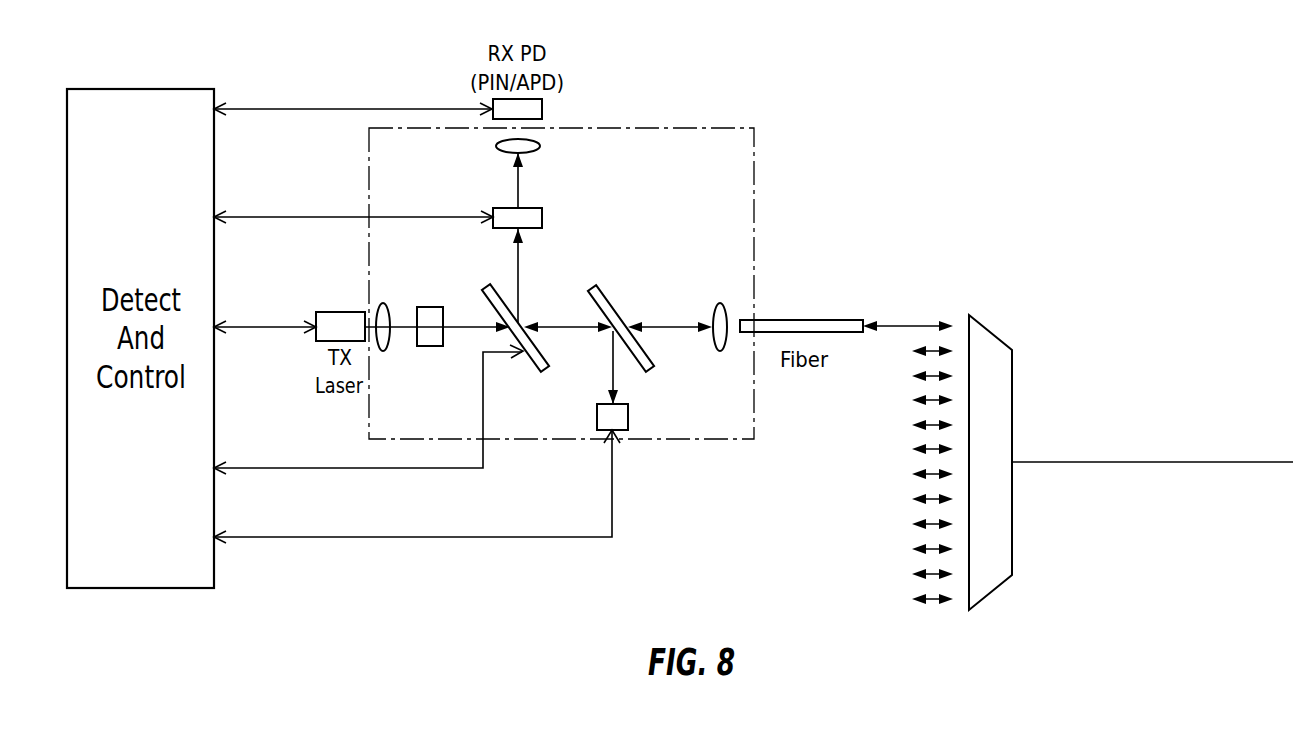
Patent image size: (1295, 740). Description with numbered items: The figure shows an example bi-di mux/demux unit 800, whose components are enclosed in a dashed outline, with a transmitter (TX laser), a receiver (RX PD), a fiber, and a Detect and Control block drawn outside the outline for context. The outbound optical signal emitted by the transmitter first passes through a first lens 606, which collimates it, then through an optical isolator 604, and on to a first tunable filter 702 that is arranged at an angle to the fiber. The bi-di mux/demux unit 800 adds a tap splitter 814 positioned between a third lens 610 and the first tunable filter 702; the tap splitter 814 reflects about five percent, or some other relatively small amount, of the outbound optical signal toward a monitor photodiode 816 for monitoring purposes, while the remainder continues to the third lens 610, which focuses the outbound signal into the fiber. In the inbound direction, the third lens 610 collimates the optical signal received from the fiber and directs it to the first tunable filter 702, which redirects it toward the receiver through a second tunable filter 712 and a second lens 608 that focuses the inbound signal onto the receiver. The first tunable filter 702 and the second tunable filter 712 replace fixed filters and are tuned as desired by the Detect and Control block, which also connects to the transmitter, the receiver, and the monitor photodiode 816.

The bi-di mux/demux unit 800 is at (695, 128).
The optical isolator 604 is at (416, 310).
The first lens 606 is at (378, 306).
The second lens 608 is at (540, 146).
The third lens 610 is at (729, 346).
The first tunable filter 702 is at (547, 372).
The second tunable filter 712 is at (542, 223).
The tap splitter 814 is at (613, 303).
The monitor photodiode 816 is at (628, 418).